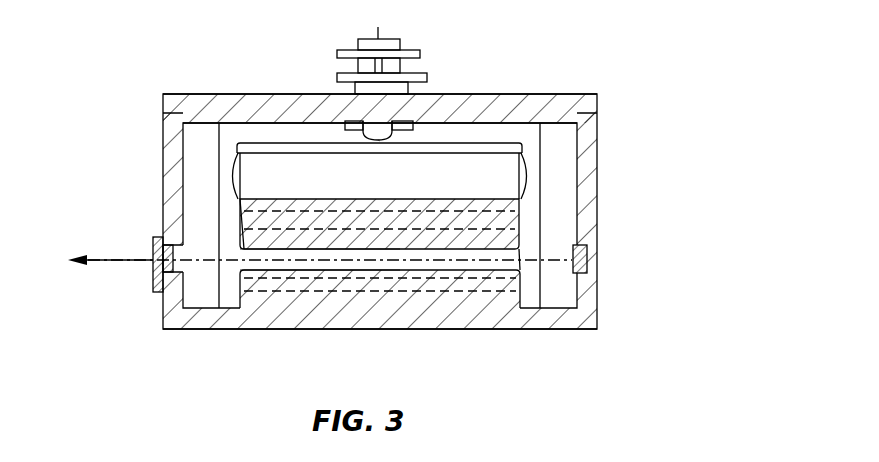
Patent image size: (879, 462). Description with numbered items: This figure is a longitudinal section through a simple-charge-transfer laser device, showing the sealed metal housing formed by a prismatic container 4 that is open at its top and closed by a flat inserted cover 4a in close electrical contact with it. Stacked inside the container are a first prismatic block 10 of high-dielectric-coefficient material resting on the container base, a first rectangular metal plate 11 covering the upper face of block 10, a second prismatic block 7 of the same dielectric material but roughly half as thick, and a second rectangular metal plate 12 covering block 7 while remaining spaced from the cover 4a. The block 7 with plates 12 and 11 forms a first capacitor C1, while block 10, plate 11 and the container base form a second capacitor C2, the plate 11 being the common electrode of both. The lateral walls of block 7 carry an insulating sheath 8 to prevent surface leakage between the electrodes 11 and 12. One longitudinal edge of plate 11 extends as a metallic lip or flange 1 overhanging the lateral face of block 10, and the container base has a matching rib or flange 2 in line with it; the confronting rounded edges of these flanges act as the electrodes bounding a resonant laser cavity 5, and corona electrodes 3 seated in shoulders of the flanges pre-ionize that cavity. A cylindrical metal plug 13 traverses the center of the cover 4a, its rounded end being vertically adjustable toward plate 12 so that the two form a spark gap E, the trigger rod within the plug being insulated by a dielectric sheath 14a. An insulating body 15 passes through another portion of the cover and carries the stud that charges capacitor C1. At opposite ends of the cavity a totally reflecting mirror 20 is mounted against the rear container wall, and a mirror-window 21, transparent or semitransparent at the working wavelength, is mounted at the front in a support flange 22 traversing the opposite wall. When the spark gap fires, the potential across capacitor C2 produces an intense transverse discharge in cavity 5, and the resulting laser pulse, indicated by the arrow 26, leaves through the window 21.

The metallic lip or flange 1 is at (513, 221).
The longitudinal metal rib or flange 2 is at (457, 303).
The corona electrodes 3 is at (365, 248).
The prismatic container 4 is at (560, 318).
The flat inserted cover 4a is at (213, 109).
The resonant laser cavity 5 is at (336, 262).
The second prismatic block 7 is at (493, 170).
The insulating sheath 8 is at (527, 179).
The first prismatic block 10 is at (281, 257).
The first rectangular metal plate 11 is at (242, 200).
The second rectangular metal plate 12 is at (499, 146).
The cylindrical metal plug 13 is at (352, 126).
The dielectric sheath 14a is at (372, 66).
The insulating body 15 is at (416, 53).
The totally reflecting mirror 20 is at (588, 249).
The mirror-window 21 is at (152, 272).
The support flange 22 is at (157, 236).
The arrow 26 is at (109, 257).
The first capacitor C1 is at (227, 156).
The second capacitor C2 is at (524, 268).
The spark gap E is at (384, 139).